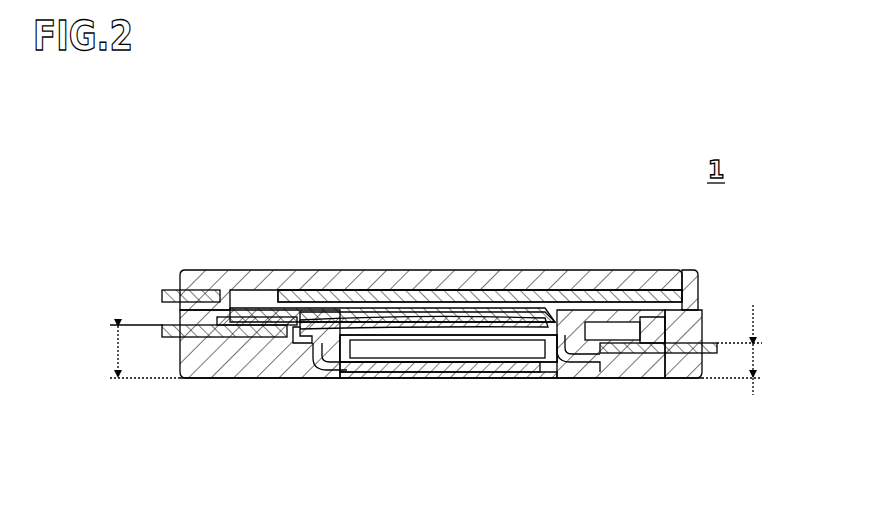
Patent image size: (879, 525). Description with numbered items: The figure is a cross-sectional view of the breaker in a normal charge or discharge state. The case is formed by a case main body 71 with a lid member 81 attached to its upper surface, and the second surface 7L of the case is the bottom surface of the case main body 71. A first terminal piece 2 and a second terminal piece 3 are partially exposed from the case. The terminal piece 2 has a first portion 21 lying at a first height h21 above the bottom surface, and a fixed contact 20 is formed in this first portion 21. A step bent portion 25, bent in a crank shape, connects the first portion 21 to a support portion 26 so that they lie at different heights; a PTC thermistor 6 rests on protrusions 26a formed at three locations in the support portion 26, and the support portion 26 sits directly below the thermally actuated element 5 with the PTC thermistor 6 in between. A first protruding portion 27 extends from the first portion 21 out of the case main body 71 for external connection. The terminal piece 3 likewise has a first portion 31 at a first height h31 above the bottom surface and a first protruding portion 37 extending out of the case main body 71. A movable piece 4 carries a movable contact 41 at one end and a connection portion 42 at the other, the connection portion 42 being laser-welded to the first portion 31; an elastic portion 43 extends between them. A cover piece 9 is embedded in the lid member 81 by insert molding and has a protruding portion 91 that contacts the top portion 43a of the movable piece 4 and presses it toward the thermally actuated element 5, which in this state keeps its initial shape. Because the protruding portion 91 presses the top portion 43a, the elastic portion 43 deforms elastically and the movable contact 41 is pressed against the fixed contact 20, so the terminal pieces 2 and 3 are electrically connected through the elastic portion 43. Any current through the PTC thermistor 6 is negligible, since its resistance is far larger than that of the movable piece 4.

The first terminal piece 2 is at (573, 370).
The second terminal piece 3 is at (192, 340).
The movable piece 4 is at (545, 312).
The thermally actuated element 5 is at (490, 328).
The PTC thermistor 6 is at (440, 346).
The cover piece 9 is at (437, 306).
The fixed contact 20 is at (634, 328).
The first portion 21 is at (665, 352).
The step bent portion 25 is at (590, 358).
The support portion 26 is at (478, 368).
The protrusions 26a is at (372, 366).
The first protruding portion 27 is at (705, 343).
The first portion 31 is at (238, 340).
The first protruding portion 37 is at (163, 326).
The movable contact 41 is at (618, 360).
The connection portion 42 is at (239, 322).
The elastic portion 43 is at (483, 310).
The top portion 43a is at (352, 318).
The case main body 71 is at (298, 350).
The lid member 81 is at (305, 292).
The protruding portion 91 is at (383, 304).
The second surface 7L is at (686, 380).
The first height h21 is at (758, 350).
The first height h31 is at (118, 351).